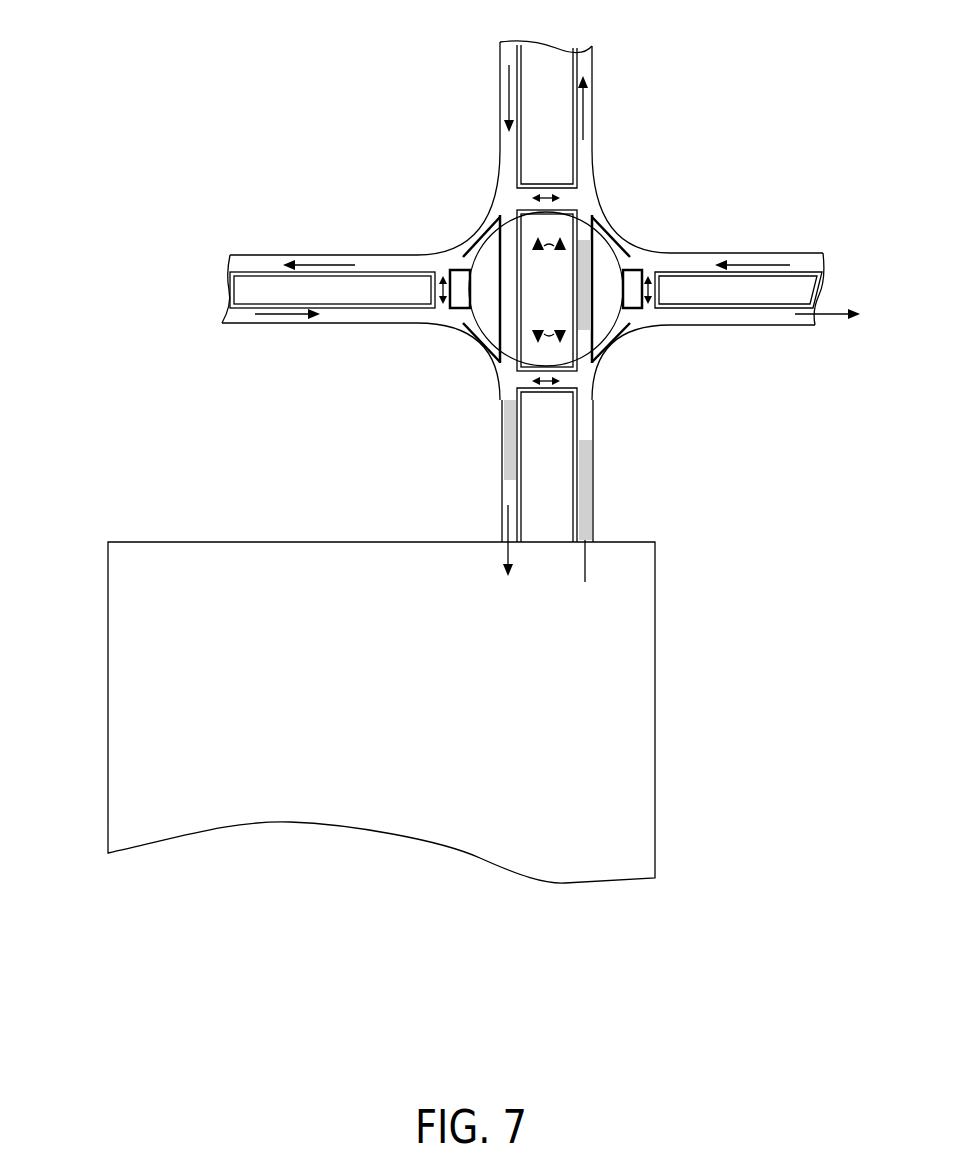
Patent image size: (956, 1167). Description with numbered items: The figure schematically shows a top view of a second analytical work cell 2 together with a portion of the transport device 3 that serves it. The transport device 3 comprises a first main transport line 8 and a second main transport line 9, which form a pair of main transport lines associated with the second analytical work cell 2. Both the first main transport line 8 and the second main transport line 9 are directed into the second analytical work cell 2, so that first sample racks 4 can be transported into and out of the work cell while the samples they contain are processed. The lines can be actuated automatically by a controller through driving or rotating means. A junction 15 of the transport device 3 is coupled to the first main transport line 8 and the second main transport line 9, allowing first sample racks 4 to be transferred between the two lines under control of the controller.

The second analytical work cell 2 is at (108, 683).
The transport device 3 is at (343, 75).
The first sample rack 4 is at (508, 438).
The first main transport line 8 is at (587, 98).
The second main transport line 9 is at (503, 52).
The junction 15 is at (476, 203).